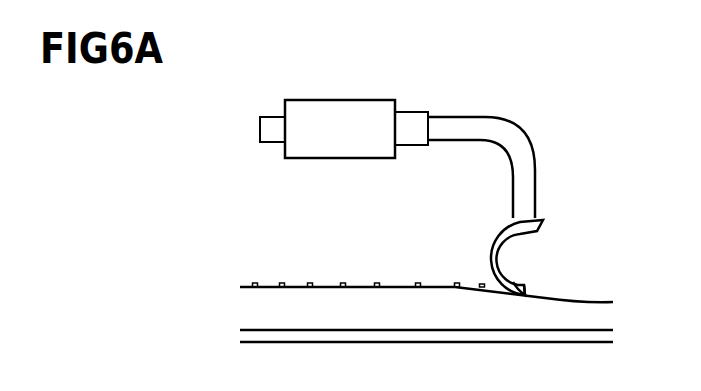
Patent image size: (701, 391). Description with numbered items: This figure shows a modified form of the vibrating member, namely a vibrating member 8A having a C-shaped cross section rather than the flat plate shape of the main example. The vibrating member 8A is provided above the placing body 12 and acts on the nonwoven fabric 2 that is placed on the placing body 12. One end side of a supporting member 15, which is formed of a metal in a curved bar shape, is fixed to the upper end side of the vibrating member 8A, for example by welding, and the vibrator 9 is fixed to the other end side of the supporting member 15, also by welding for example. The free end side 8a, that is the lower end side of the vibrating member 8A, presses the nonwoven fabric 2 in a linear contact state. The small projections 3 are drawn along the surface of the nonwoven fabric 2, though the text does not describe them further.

The vibrator 9 is at (317, 100).
The supporting member 15 is at (482, 117).
The vibrating member having a C-shaped cross section 8A is at (485, 250).
The free end side 8a is at (522, 288).
The nonwoven fabric 2 is at (363, 282).
The projections 3 is at (310, 283).
The placing body 12 is at (287, 342).